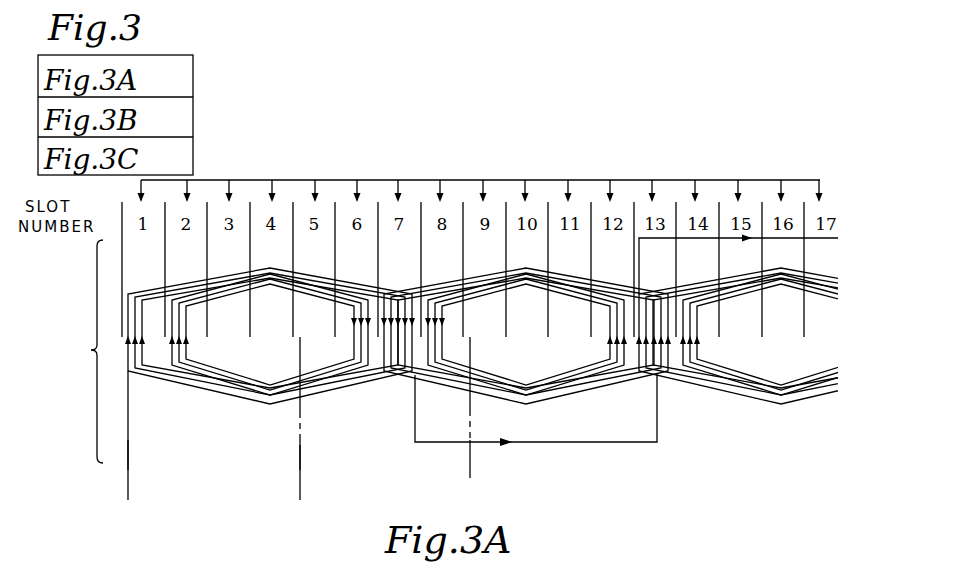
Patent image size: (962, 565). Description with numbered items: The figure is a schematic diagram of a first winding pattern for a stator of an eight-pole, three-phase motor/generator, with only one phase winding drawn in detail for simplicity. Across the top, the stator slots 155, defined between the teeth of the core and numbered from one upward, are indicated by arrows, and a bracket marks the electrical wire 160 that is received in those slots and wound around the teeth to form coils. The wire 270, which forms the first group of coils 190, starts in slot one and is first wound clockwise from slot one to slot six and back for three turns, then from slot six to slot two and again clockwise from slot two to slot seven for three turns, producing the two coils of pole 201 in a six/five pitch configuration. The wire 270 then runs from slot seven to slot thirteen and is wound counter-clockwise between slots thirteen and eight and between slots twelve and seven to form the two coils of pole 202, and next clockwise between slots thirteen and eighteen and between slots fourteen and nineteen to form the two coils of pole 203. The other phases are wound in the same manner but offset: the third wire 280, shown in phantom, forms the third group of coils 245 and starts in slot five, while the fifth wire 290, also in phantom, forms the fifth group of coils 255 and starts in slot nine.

The slots 155 is at (498, 179).
The electrical wires 160 is at (65, 351).
The first group of coils 190 is at (144, 460).
The pole 201 is at (277, 372).
The pole 202 is at (547, 372).
The pole 203 is at (790, 372).
The third group of coils 245 is at (312, 443).
The fifth group of coils 255 is at (475, 428).
The wire 270 is at (130, 455).
The third wire 280 is at (302, 455).
The fifth wire 290 is at (470, 452).